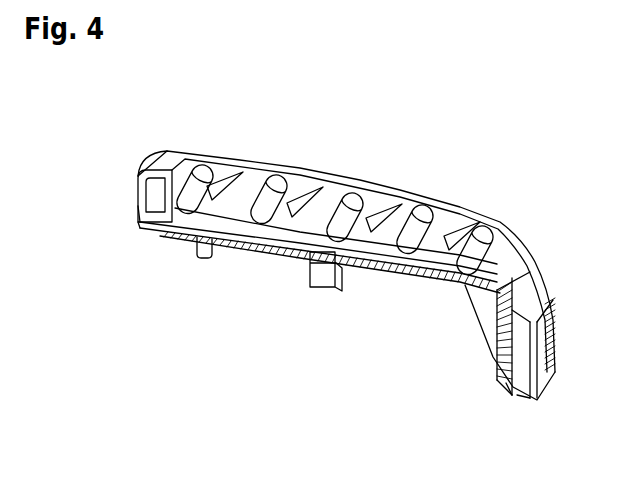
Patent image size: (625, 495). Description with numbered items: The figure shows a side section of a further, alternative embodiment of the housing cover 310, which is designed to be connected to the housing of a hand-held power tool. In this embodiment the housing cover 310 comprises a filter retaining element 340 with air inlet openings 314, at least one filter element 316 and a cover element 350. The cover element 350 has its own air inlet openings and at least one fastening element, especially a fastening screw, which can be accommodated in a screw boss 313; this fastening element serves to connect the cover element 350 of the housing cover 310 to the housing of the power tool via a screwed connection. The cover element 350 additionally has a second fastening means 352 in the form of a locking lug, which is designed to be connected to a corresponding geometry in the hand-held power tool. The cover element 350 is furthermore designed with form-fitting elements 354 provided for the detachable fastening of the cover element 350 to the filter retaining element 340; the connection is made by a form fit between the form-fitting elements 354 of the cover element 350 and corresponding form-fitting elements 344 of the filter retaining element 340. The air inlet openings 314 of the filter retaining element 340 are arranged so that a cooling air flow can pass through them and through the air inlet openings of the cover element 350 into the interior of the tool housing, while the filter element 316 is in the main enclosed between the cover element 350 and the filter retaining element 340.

The housing cover 310 is at (310, 273).
The screw boss 313 is at (320, 298).
The air inlet openings 314 is at (428, 190).
The filter element 316 is at (264, 167).
The filter retaining element 340 is at (530, 250).
The form-fitting elements 344 is at (138, 225).
The cover element 350 is at (268, 262).
The second fastening means 352 is at (200, 257).
The form-fitting elements 354 is at (137, 208).